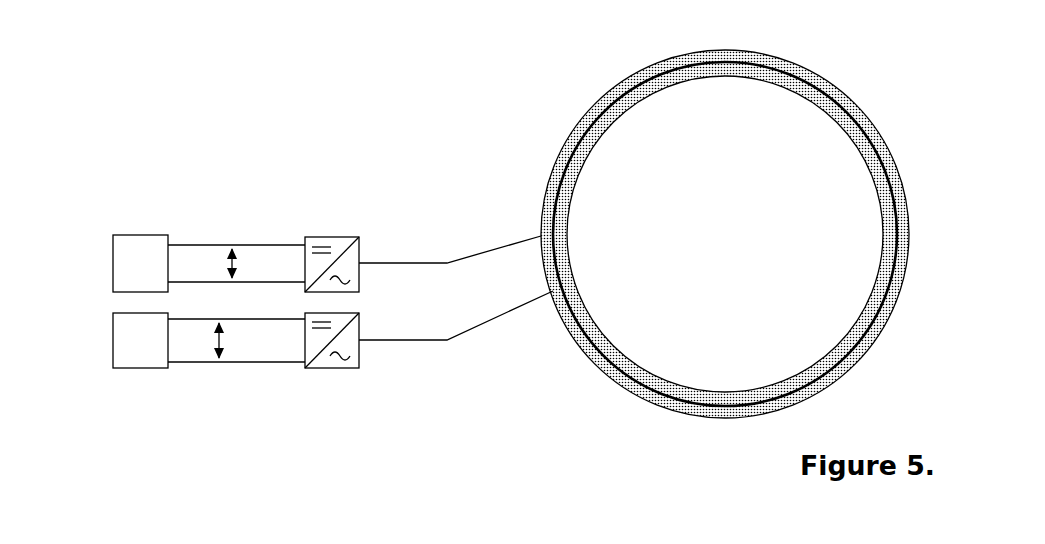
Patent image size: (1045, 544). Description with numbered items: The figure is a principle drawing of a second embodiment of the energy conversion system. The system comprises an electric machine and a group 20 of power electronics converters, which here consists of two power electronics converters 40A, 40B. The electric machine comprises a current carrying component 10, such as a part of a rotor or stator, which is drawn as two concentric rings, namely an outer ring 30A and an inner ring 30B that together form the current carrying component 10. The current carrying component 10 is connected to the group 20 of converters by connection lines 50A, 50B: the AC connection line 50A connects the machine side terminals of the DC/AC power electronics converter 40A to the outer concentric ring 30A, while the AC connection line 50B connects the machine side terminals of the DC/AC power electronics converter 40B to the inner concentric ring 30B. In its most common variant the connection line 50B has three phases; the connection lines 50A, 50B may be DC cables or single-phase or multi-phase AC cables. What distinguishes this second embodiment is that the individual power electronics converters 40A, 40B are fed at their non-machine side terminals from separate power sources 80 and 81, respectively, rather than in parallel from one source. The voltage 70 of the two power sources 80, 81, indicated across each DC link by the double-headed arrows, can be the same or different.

The current carrying component 10 is at (710, 211).
The group of power electronics converters 20 is at (294, 259).
The outer ring 30A is at (808, 78).
The inner ring 30B is at (838, 107).
The power electronics converter 40A is at (337, 238).
The power electronics converter 40B is at (360, 355).
The connection line 50A is at (382, 262).
The connection line 50B is at (380, 339).
The voltage 70 is at (232, 262).
The power source 80 is at (113, 260).
The power source 81 is at (113, 340).